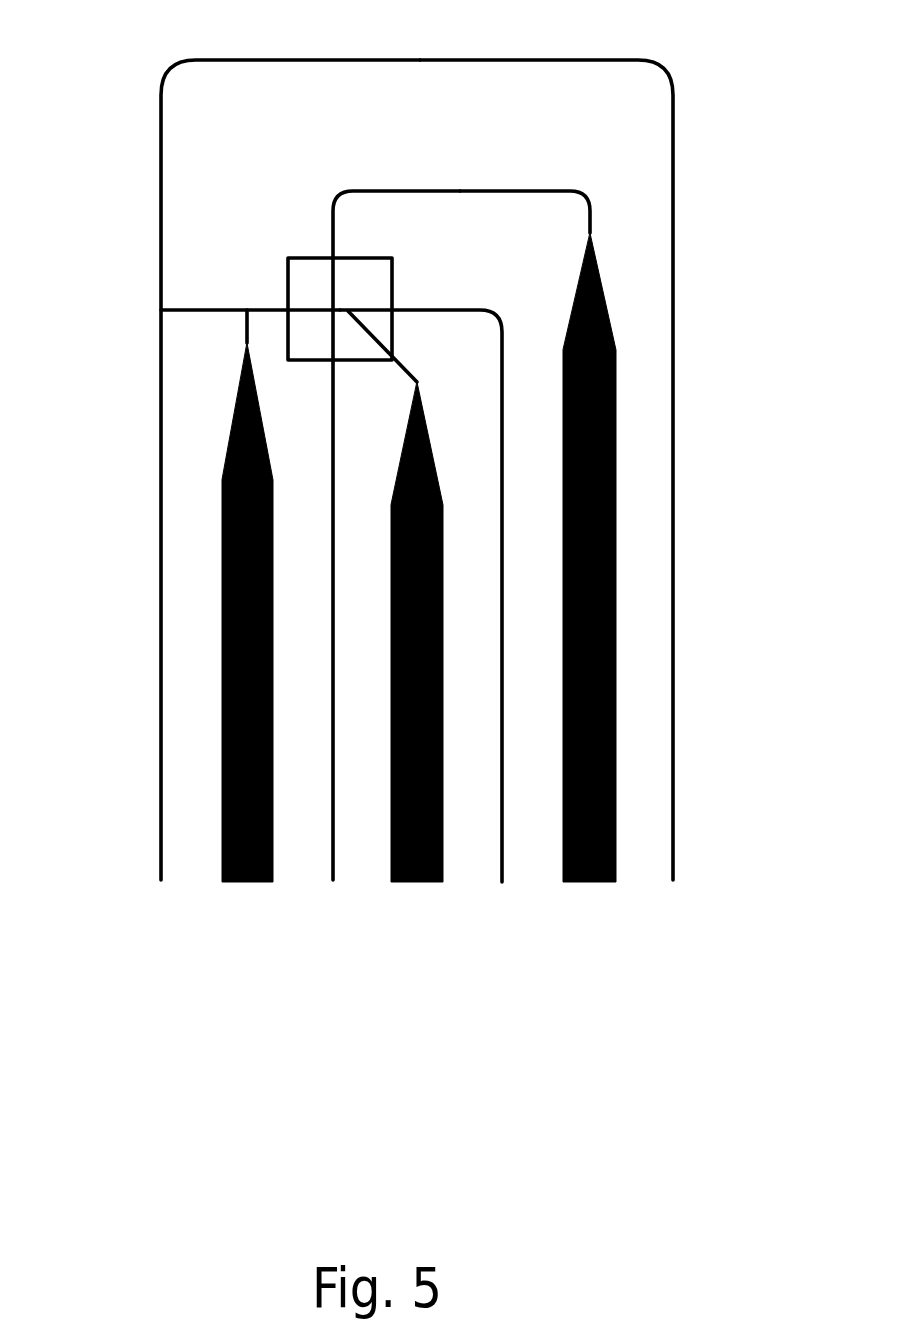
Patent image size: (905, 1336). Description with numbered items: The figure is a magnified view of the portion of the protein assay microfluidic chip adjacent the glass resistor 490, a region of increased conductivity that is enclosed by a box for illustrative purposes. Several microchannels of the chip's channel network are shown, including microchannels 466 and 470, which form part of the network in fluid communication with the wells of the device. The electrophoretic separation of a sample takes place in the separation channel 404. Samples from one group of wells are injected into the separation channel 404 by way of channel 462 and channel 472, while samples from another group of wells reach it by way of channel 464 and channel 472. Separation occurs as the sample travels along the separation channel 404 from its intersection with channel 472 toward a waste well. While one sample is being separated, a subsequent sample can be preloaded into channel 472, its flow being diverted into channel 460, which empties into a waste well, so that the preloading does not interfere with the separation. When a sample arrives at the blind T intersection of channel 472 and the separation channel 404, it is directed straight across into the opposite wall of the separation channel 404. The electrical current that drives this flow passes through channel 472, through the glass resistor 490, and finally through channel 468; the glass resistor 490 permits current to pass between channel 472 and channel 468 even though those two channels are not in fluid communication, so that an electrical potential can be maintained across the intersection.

The separation channel 404 is at (330, 868).
The channel 460 is at (256, 884).
The channel 462 is at (153, 680).
The channel 464 is at (676, 677).
The microchannel 466 is at (413, 884).
The channel 468 is at (498, 862).
The microchannel 470 is at (598, 884).
The channel 472 is at (265, 309).
The glass resistor 490 is at (302, 257).